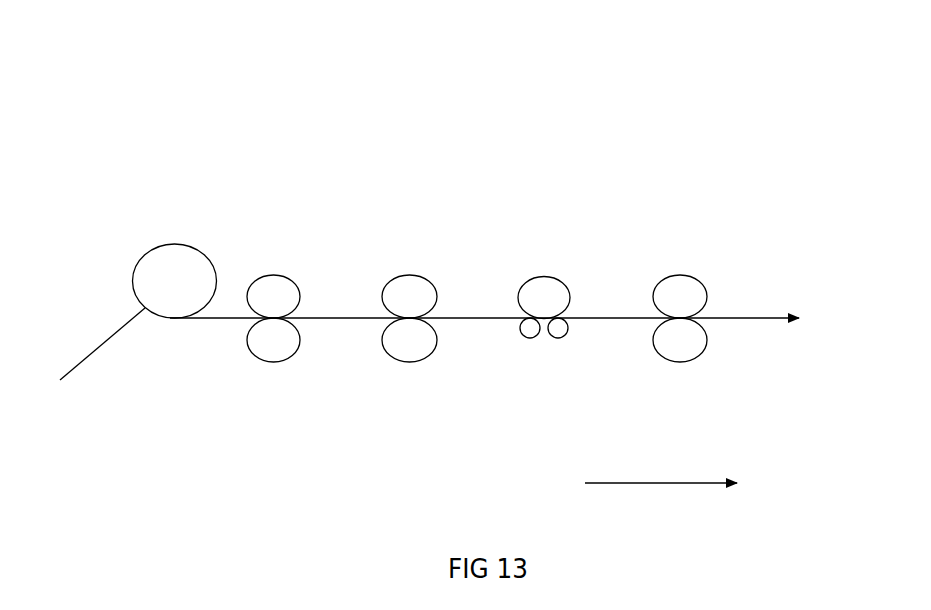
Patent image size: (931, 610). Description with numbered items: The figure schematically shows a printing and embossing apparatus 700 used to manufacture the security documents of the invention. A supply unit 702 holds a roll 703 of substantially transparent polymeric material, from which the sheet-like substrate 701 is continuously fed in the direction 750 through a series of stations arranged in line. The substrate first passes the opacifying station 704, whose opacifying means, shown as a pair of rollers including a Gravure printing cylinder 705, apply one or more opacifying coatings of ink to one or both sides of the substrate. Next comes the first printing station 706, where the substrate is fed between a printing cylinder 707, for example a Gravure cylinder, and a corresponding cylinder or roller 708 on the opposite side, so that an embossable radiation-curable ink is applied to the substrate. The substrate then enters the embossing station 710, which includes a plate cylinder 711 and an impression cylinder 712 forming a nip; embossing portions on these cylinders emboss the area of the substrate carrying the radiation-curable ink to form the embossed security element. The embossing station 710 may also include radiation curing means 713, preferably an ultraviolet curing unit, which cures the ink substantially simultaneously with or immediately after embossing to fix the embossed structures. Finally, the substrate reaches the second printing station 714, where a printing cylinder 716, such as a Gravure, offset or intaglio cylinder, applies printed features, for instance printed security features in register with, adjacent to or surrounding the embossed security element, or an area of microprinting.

The printing and embossing apparatus 700 is at (345, 142).
The substrate 701 is at (215, 318).
The supply unit 702 is at (173, 257).
The roll 703 is at (98, 364).
The opacifying station 704 is at (278, 265).
The Gravure printing cylinder 705 is at (268, 348).
The first printing station 706 is at (377, 289).
The printing cylinder 707 is at (395, 293).
The cylinder or roller 708 is at (400, 349).
The embossing station 710 is at (530, 302).
The plate cylinder 711 is at (545, 283).
The impression cylinder 712 is at (530, 330).
The radiation curing means 713 is at (560, 332).
The second printing station 714 is at (666, 268).
The printing cylinder 716 is at (683, 348).
The feed direction 750 is at (661, 503).